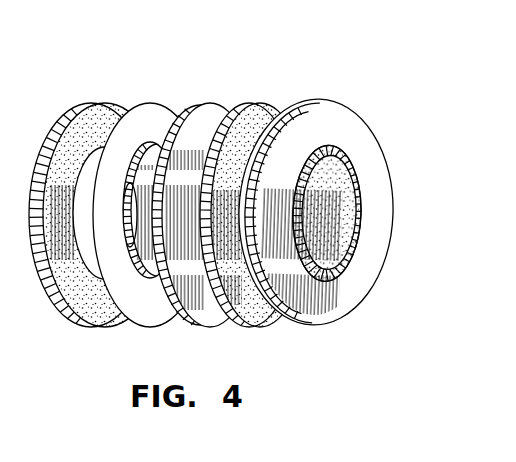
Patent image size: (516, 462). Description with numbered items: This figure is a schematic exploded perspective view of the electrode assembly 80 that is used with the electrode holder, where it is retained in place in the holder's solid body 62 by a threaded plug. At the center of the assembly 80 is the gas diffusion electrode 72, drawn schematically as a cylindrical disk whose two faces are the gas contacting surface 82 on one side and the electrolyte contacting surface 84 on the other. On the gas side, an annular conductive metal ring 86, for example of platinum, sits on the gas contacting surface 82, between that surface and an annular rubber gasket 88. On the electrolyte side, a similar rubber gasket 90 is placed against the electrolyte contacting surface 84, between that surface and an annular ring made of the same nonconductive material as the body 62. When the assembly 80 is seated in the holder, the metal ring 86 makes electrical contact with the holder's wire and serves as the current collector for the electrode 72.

The electrode assembly 80 is at (255, 70).
The annular rubber gasket 88 is at (100, 110).
The annular conductive metal ring 86 is at (149, 110).
The gas contacting surface 82 is at (163, 113).
The electrolyte contacting surface 84 is at (199, 173).
The gas diffusion electrode 72 is at (213, 110).
The rubber gasket 90 is at (276, 106).
The solid body 62 is at (340, 130).